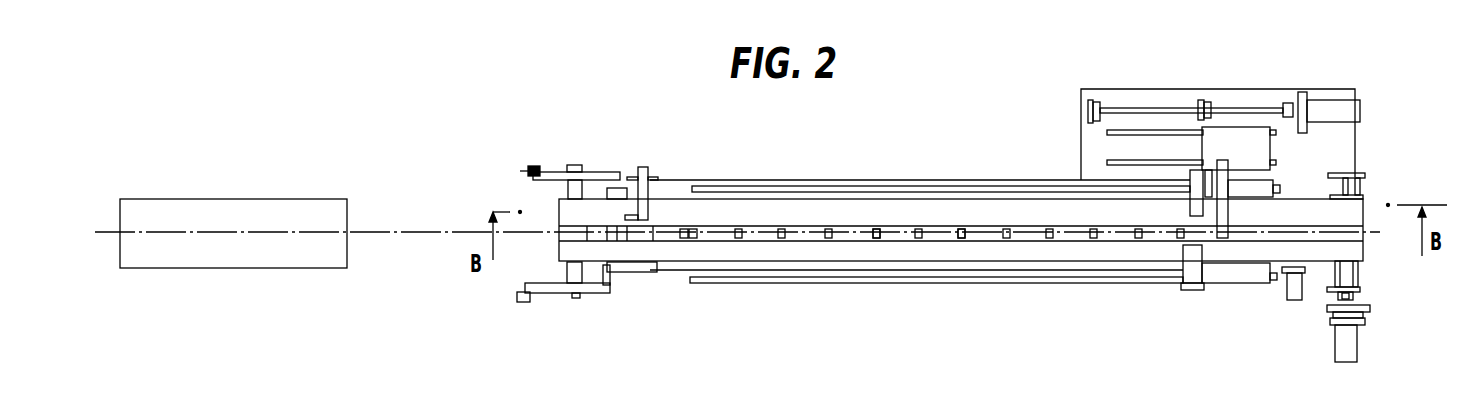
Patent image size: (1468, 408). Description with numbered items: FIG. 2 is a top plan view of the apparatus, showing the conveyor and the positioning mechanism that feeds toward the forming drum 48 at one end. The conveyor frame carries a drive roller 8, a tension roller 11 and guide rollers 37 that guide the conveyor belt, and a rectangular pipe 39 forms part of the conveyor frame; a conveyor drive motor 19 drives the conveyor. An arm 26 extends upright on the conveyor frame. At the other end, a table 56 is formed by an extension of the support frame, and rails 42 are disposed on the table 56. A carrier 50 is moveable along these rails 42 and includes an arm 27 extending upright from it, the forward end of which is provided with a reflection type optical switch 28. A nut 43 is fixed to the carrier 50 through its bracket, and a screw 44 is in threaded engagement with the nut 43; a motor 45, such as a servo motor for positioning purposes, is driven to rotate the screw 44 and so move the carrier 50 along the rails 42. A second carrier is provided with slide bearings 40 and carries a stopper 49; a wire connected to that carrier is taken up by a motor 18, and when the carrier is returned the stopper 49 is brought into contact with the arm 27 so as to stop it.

The drive roller 8 is at (1365, 196).
The tension roller 11 is at (559, 232).
The motor 18 is at (1290, 293).
The conveyor drive motor 19 is at (1352, 352).
The arm 26 is at (648, 172).
The arm 27 is at (1222, 197).
The reflection type optical switch 28 is at (1210, 222).
The guide rollers 37 is at (960, 240).
The rectangular pipe 39 is at (888, 240).
The slide bearings 40 is at (1088, 118).
The rails 42 is at (1128, 162).
The nut 43 is at (1203, 100).
The screw 44 is at (1143, 108).
The motor 45 is at (1360, 112).
The forming drum 48 is at (347, 216).
The stopper 49 is at (1225, 195).
The carrier 50 is at (1222, 135).
The table 56 is at (1330, 89).